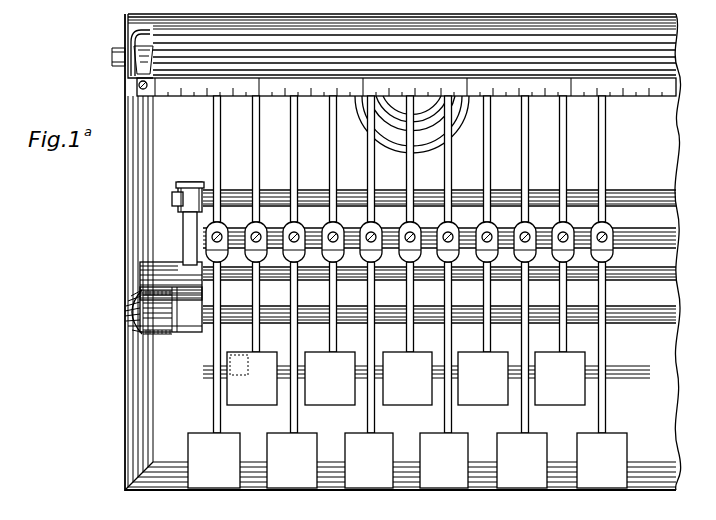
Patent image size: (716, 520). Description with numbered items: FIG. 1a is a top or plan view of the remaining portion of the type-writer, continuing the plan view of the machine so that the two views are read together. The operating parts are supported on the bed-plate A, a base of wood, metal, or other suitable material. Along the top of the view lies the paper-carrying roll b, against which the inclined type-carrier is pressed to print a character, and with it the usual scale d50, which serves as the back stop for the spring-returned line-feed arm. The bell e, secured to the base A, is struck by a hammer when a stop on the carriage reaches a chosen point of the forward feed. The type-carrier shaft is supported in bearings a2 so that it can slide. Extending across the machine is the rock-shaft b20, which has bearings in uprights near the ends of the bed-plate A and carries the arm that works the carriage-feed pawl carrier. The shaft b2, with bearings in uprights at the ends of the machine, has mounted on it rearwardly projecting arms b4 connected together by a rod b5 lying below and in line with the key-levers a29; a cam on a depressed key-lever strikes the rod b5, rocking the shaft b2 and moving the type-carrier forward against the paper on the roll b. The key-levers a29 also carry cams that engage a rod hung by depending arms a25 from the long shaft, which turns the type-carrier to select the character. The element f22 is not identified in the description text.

The bed-plate A is at (125, 207).
The paper-carrying roll b is at (482, 40).
The scale d50 is at (177, 92).
The bell e is at (424, 130).
The rock-shaft b20 is at (311, 191).
The shaft b2 is at (318, 279).
The depending arms a25 is at (189, 332).
The bearings a2 is at (145, 318).
The rod b5 is at (205, 183).
The rearwardly projecting arms b4 is at (183, 230).
The middle block f22 is at (236, 341).
The key-levers a29 is at (215, 403).